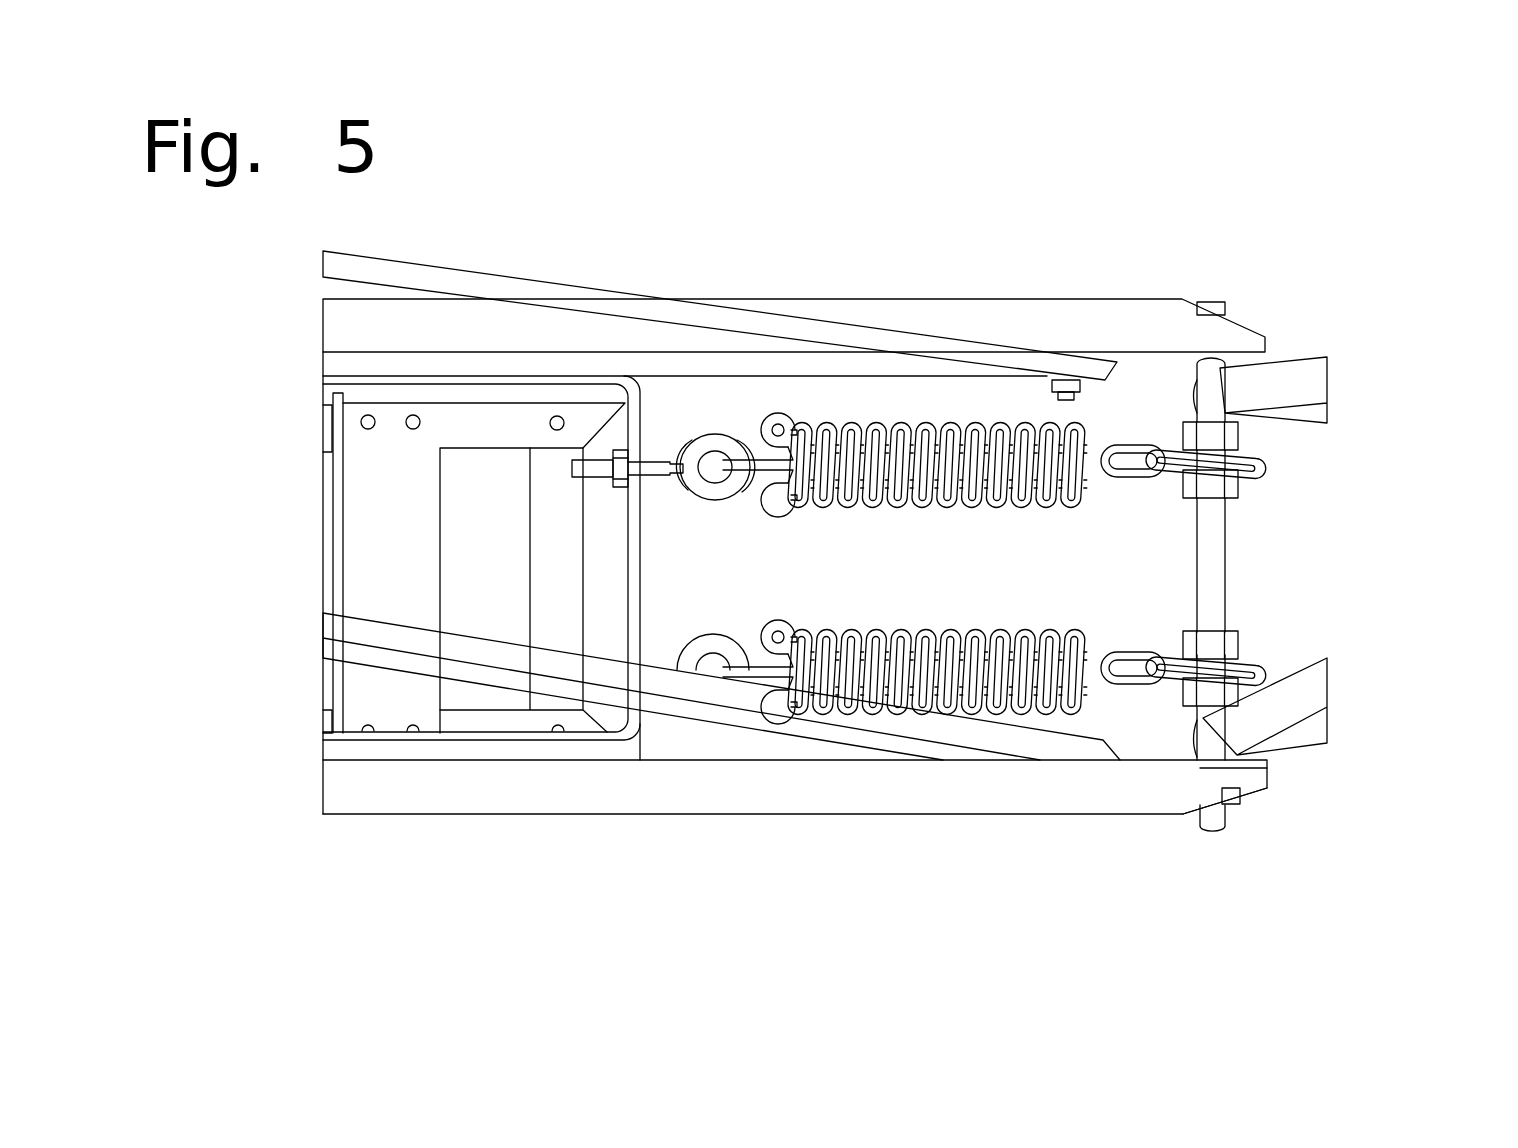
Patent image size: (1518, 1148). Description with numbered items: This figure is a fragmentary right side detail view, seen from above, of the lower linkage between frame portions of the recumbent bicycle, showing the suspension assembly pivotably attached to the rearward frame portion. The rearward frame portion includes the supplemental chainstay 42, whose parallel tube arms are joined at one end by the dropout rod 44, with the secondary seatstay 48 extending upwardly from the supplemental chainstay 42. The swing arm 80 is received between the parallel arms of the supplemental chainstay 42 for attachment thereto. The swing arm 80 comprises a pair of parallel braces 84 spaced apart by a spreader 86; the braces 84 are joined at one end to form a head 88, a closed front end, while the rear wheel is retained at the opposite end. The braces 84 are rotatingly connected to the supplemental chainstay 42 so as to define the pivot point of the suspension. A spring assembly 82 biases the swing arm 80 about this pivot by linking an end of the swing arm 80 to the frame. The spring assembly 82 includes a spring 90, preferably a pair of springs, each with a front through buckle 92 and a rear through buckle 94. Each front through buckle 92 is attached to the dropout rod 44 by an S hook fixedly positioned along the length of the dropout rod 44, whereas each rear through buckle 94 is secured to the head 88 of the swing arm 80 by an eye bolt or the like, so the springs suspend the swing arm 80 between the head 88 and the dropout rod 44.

The supplemental chainstay 42 is at (670, 817).
The dropout rod 44 is at (1232, 572).
The secondary seatstay 48 is at (514, 273).
The swing arm 80 is at (322, 418).
The spring assembly 82 is at (968, 417).
The parallel braces 84 is at (467, 450).
The spreader 86 is at (479, 563).
The head 88 is at (640, 622).
The spring 90 is at (887, 505).
The front through buckle 92 is at (1103, 487).
The rear through buckle 94 is at (758, 473).